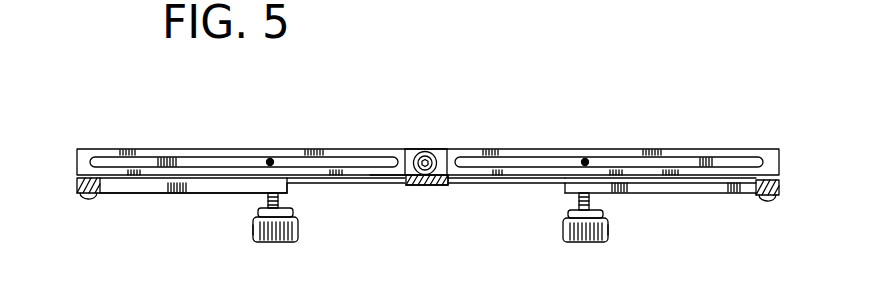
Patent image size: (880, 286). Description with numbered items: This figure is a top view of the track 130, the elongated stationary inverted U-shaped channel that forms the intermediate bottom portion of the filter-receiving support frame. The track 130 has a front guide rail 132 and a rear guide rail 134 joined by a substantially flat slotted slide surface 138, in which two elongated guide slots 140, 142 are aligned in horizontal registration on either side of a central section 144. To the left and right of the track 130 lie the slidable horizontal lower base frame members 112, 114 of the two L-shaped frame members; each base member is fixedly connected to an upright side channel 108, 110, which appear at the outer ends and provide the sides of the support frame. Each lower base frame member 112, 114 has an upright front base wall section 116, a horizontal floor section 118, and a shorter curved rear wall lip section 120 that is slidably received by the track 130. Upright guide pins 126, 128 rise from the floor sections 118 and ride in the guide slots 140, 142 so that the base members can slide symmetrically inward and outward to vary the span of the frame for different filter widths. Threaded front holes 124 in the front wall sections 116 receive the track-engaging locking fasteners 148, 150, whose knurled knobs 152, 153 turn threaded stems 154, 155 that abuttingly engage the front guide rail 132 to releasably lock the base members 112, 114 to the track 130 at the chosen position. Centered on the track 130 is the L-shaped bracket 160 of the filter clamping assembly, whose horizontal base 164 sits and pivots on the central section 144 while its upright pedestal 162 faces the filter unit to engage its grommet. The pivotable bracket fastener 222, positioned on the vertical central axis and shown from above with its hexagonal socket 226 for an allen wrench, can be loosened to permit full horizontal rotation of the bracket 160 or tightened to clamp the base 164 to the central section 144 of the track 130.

The side channel 108 is at (78, 188).
The side channel 110 is at (780, 189).
The lower base frame member 112 is at (120, 193).
The lower base frame member 114 is at (677, 194).
The front base wall section 116 is at (160, 194).
The floor section 118 is at (668, 163).
The rear wall lip section 120 is at (713, 177).
The threaded front hole 124 is at (290, 195).
The guide pin 126 is at (270, 159).
The guide pin 128 is at (586, 159).
The track 130 is at (382, 176).
The front guide rail 132 is at (502, 181).
The rear guide rail 134 is at (527, 149).
The slide surface 138 is at (326, 150).
The guide slot 140 is at (92, 157).
The guide slot 142 is at (443, 155).
The central section 144 is at (403, 152).
The locking fastener 148 is at (275, 243).
The locking fastener 150 is at (590, 243).
The knurled knob 152 is at (254, 230).
The knurled knob 153 is at (608, 230).
The threaded stem 154 is at (266, 203).
The threaded stem 155 is at (590, 203).
The L-shaped bracket 160 is at (447, 184).
The pedestal 162 is at (428, 187).
The base 164 is at (411, 150).
The bracket fastener 222 is at (428, 157).
The hexagonal socket 226 is at (413, 186).